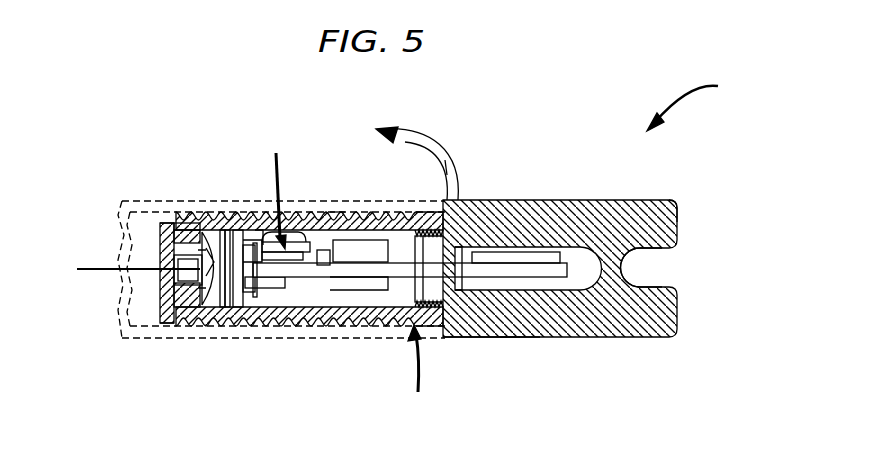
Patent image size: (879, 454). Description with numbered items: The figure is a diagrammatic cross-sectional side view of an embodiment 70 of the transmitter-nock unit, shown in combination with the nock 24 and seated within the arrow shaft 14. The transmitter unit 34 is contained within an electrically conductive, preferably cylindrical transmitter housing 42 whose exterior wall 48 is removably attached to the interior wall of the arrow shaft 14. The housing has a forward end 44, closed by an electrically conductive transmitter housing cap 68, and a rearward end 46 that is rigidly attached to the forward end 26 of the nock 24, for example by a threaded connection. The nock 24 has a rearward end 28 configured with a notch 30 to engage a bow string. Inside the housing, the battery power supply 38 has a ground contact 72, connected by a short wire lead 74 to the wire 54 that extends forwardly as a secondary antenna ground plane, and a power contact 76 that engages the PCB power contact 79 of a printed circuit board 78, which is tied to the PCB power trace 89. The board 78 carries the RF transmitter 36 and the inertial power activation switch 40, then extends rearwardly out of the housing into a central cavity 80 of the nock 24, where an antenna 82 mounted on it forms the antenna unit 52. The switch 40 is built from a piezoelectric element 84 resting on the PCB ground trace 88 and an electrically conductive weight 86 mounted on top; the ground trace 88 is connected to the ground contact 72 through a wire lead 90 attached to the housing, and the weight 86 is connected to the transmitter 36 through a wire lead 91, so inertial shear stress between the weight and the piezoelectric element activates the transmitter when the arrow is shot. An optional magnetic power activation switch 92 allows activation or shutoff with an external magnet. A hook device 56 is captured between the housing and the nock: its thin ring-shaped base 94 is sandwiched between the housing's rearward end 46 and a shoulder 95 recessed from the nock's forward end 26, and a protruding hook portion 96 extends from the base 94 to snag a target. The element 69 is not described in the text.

The arrow shaft 14 is at (112, 200).
The nock 24 is at (595, 200).
The forward end of the nock 26 is at (398, 278).
The rearward end of the nock 28 is at (678, 221).
The notch 30 is at (662, 253).
The transmitter unit 34 is at (417, 369).
The RF transmitter 36 is at (375, 238).
The battery power supply 38 is at (222, 225).
The inertial power activation switch 40 is at (277, 189).
The transmitter housing 42 is at (263, 228).
The forward end of the transmitter housing 44 is at (160, 318).
The rearward end of the transmitter housing 46 is at (480, 338).
The exterior wall 48 is at (330, 212).
The antenna unit 52 is at (518, 338).
The wire 54 is at (102, 266).
The hook device 56 is at (447, 230).
The transmitter housing cap 68 is at (150, 221).
The spring dome 69 is at (172, 326).
The transmitter-nock unit embodiment 70 is at (695, 103).
The ground contact 72 is at (206, 326).
The wire lead 74 is at (160, 277).
The power contact 76 is at (243, 292).
The printed circuit board 78 is at (345, 290).
The PCB power contact 79 is at (250, 292).
The central cavity 80 is at (460, 253).
The antenna 82 is at (513, 250).
The piezoelectric element 84 is at (263, 297).
The weight 86 is at (300, 242).
The ground trace 88 is at (281, 277).
The power trace 89 is at (306, 277).
The wire lead 90 is at (243, 250).
The wire lead 91 is at (338, 212).
The magnetic power activation switch 92 is at (322, 277).
The ring-shaped base 94 is at (448, 338).
The shoulder 95 is at (462, 250).
The protruding hook portion 96 is at (447, 165).